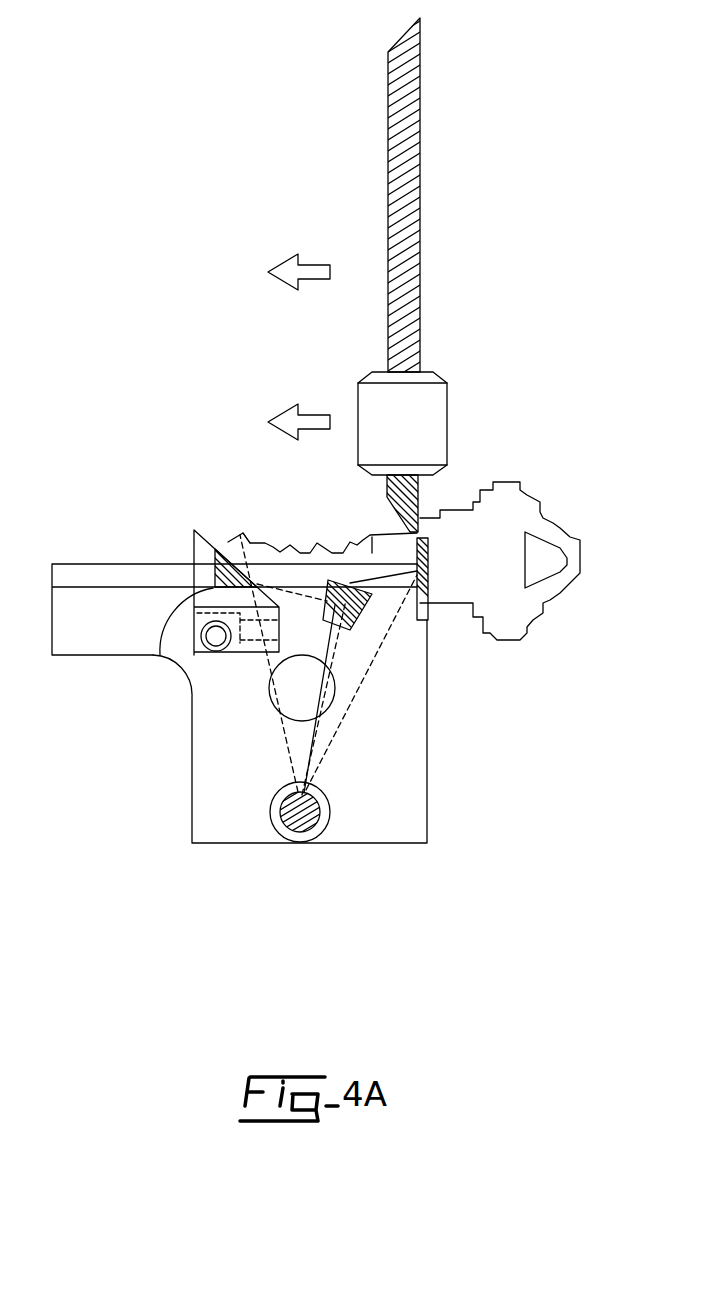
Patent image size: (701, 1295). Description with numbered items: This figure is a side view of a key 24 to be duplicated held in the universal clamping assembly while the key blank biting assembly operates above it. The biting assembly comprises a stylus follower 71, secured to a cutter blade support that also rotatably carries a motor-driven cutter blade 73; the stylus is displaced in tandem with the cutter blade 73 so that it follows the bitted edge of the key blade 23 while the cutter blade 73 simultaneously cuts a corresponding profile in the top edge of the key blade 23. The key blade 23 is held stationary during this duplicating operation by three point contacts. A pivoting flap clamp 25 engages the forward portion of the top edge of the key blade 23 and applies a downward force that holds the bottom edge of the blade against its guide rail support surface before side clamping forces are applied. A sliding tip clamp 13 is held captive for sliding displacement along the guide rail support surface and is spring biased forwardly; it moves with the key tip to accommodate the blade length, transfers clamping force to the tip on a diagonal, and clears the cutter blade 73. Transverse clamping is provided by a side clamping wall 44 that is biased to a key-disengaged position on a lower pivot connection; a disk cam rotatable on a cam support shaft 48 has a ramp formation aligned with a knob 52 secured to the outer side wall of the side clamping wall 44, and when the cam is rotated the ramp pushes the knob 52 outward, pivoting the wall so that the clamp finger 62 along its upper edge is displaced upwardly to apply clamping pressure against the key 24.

The sliding tip clamp 13 is at (190, 551).
The key blade 23 is at (372, 535).
The key 24 is at (512, 515).
The pivoting flap clamp 25 is at (166, 658).
The side clamping wall 44 is at (398, 758).
The cam support shaft 48 is at (323, 823).
The knob 52 is at (370, 594).
The clamp finger 62 is at (430, 576).
The stylus follower 71 is at (421, 492).
The cutter blade 73 is at (420, 243).